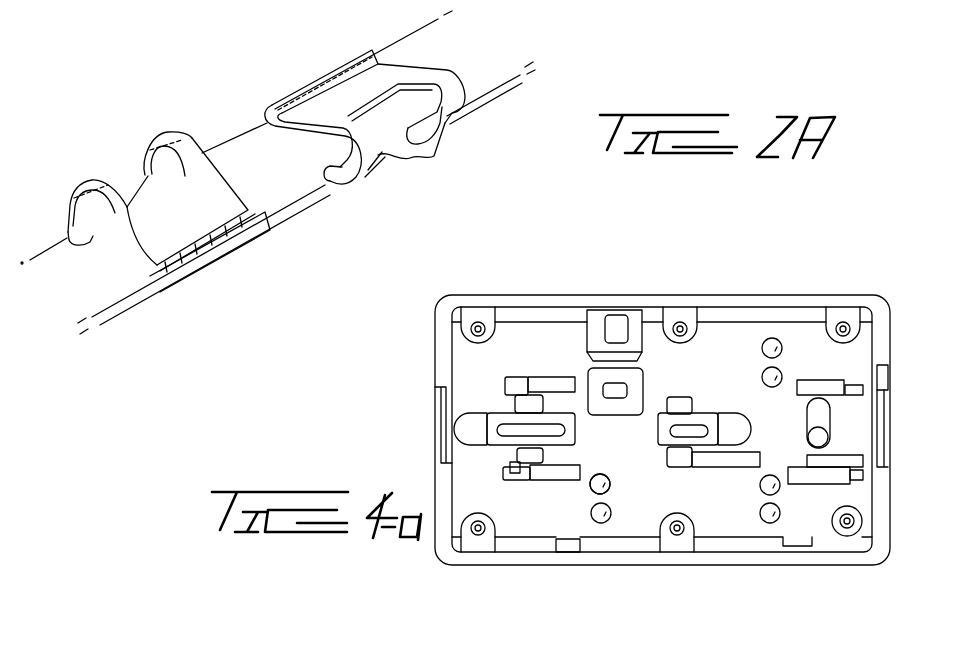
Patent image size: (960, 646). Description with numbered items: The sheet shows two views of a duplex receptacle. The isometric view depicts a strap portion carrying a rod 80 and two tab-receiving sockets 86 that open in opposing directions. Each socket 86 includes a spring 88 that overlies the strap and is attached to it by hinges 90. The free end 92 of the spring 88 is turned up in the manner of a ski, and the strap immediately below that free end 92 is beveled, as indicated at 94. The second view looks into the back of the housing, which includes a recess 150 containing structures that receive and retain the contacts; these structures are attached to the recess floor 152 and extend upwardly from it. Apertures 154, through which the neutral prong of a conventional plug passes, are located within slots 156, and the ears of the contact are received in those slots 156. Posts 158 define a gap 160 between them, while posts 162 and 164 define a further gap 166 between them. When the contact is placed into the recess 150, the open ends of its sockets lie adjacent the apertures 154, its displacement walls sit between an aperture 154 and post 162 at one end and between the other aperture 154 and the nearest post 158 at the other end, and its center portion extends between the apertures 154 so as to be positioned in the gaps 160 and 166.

In FIG. 2A, the rod 80 is at (481, 80).
In FIG. 2A, the tab-receiving socket 86 is at (199, 133).
In FIG. 2A, the spring 88 is at (312, 99).
In FIG. 2A, the hinge 90 is at (437, 142).
In FIG. 2A, the free end of the spring 92 is at (193, 240).
In FIG. 2A, the beveled strap portion 94 is at (223, 244).
In FIG. 4-a, the recess 150 is at (770, 310).
In FIG. 4-a, the recess floor 152 is at (552, 367).
In FIG. 4-a, the aperture 154 is at (563, 480).
In FIG. 4-a, the slot 156 is at (518, 473).
In FIG. 4-a, the post 158 is at (770, 523).
In FIG. 4-a, the gap 160 is at (781, 491).
In FIG. 4-a, the post 162 is at (604, 474).
In FIG. 4-a, the post 164 is at (602, 523).
In FIG. 4-a, the gap 166 is at (608, 497).